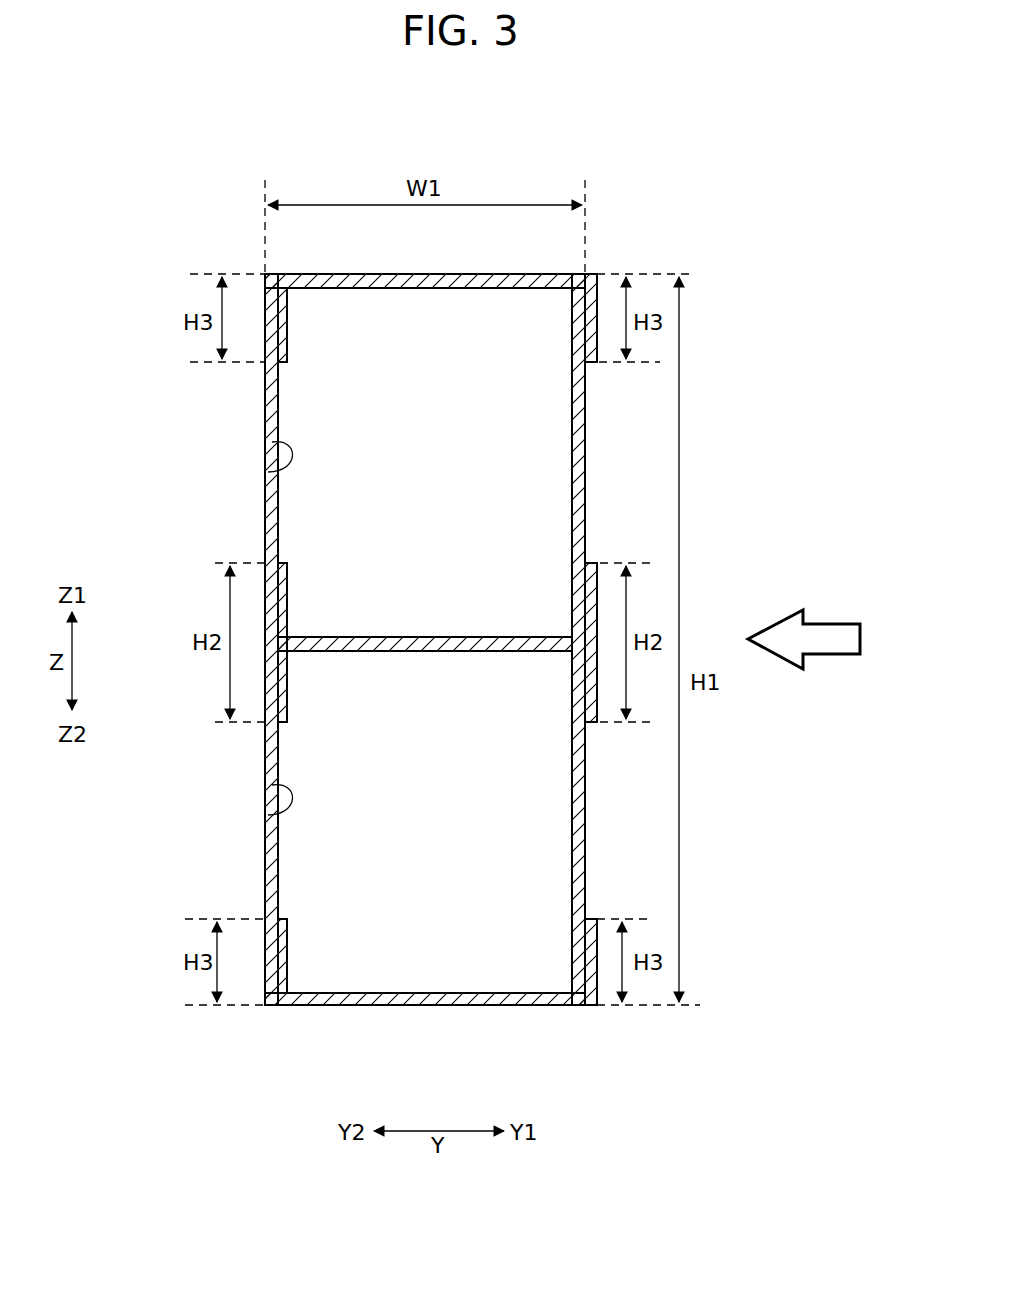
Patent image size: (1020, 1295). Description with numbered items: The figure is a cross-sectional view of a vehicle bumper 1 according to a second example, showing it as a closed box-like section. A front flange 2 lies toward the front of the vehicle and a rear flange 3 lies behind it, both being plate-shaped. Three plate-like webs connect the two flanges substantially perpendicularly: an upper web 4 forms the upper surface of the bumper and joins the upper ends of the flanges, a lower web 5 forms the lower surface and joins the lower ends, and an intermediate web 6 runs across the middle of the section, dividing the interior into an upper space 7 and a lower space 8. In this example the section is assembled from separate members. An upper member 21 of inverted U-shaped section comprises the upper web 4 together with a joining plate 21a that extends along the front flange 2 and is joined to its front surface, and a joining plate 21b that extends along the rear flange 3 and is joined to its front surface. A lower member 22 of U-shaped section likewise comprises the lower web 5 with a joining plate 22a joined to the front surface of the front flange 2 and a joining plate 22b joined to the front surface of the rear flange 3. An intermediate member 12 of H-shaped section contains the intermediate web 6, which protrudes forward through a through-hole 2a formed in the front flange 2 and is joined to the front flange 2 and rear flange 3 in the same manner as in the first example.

The bumper 1 is at (439, 610).
The front flange 2 is at (577, 408).
The through-hole 2a is at (572, 651).
The rear flange 3 is at (270, 398).
The upper web 4 is at (431, 282).
The lower web 5 is at (419, 1000).
The intermediate web 6 is at (425, 643).
The upper space 7 is at (266, 472).
The lower space 8 is at (266, 815).
The intermediate member 12 is at (478, 612).
The upper member 21 is at (469, 316).
The joining plate 21a is at (585, 340).
The joining plate 21b is at (282, 348).
The lower member 22 is at (481, 977).
The joining plate 22a is at (570, 995).
The joining plate 22b is at (290, 990).